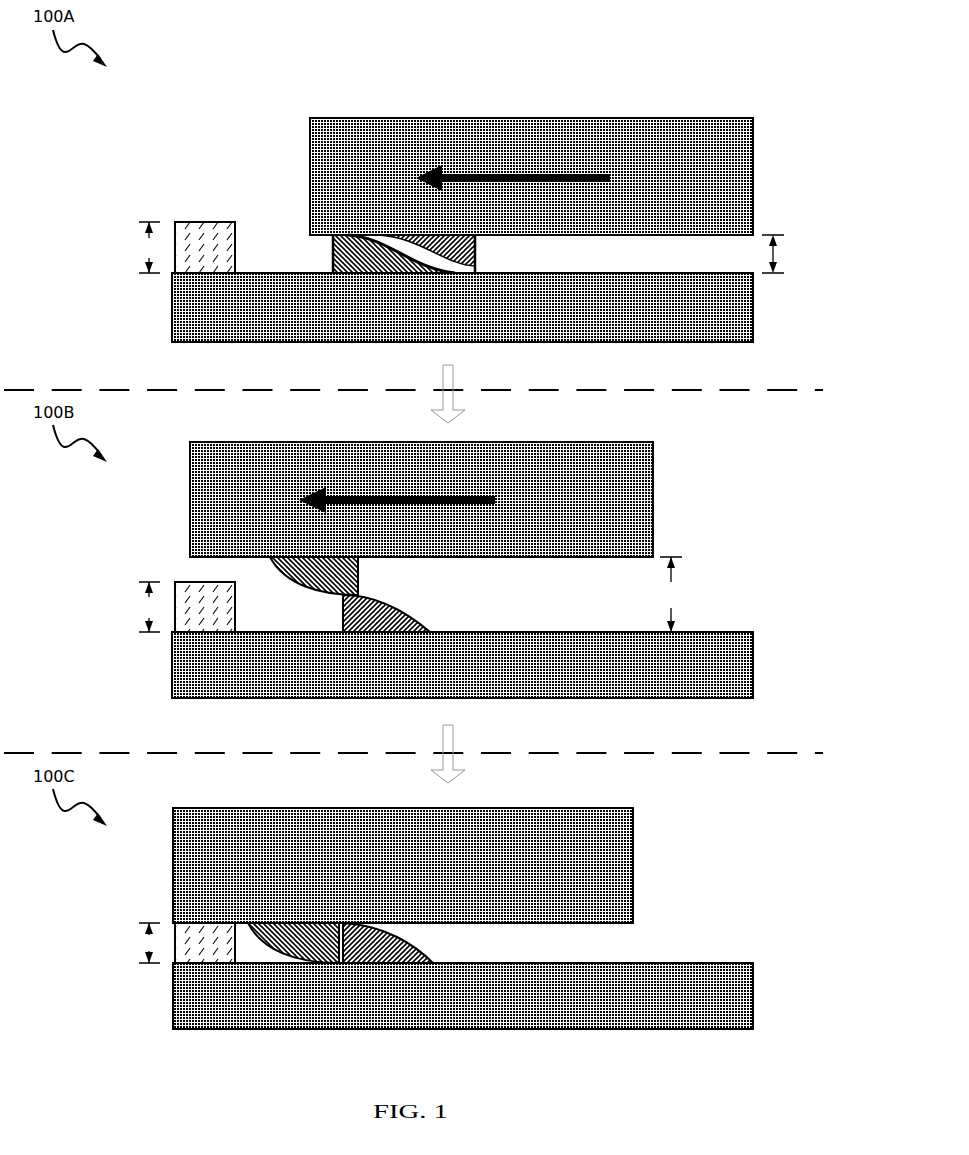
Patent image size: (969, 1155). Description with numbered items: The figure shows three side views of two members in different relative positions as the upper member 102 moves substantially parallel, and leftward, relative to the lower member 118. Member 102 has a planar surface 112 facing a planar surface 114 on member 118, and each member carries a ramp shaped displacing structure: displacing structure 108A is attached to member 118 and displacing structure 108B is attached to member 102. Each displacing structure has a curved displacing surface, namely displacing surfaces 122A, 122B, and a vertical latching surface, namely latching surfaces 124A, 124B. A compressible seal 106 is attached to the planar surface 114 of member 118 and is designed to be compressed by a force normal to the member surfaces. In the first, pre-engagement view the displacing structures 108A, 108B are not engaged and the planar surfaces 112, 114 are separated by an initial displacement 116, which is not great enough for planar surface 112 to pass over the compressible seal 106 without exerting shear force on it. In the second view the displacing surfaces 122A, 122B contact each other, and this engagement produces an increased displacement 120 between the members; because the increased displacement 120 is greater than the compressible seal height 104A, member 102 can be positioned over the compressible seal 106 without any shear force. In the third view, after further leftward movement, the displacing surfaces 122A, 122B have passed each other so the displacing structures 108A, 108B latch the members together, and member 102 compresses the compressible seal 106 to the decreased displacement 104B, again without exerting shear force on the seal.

The member 102 is at (524, 226).
The compressible seal height 104A is at (149, 427).
The decreased displacement 104B is at (128, 943).
The compressible seal 106 is at (191, 257).
The displacing structure 108A is at (347, 268).
The displacing structure 108B is at (429, 254).
The planar surface 112 is at (622, 236).
The planar surface 114 is at (648, 273).
The initial displacement 116 is at (786, 254).
The member 118 is at (478, 329).
The increased displacement 120 is at (671, 594).
The curved displacing surface 122A is at (400, 610).
The curved displacing surface 122B is at (298, 579).
The vertical latching surface 124A is at (331, 253).
The vertical latching surface 124B is at (477, 253).